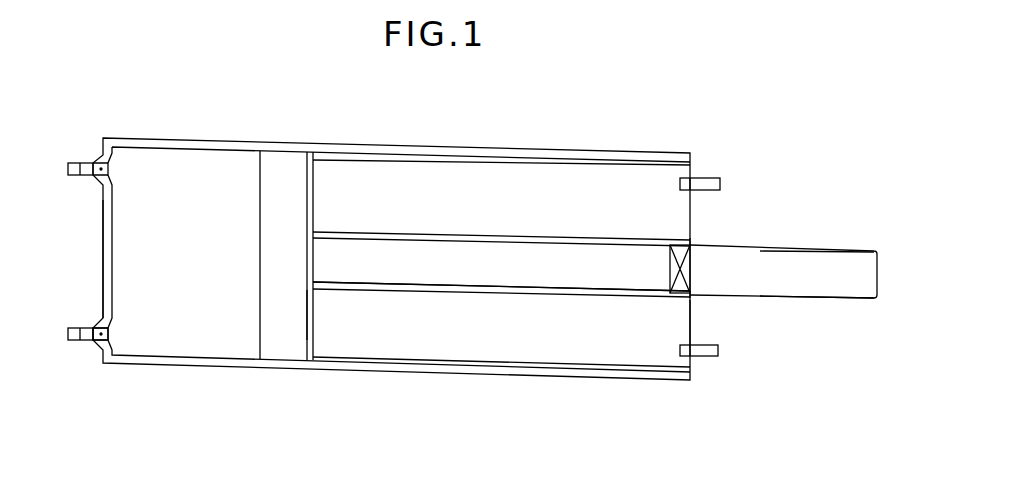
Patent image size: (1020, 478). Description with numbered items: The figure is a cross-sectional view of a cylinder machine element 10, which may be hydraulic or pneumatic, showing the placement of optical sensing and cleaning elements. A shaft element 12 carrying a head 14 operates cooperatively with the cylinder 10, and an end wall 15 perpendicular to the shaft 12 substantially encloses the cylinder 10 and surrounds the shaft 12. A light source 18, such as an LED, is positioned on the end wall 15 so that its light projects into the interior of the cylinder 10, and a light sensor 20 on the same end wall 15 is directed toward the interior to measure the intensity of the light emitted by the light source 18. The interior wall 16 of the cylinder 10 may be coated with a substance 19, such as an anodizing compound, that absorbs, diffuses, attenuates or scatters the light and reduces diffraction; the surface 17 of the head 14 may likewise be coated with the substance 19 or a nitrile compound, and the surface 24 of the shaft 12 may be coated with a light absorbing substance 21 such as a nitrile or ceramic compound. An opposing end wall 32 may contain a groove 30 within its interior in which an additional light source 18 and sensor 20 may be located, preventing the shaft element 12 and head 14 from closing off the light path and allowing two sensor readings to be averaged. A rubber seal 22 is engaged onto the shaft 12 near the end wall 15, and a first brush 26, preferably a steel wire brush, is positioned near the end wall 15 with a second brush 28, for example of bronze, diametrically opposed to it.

The cylinder machine element 10 is at (215, 370).
The shaft element 12 is at (822, 283).
The head 14 is at (283, 170).
The end wall 15 is at (699, 330).
The interior wall 16 is at (497, 161).
The surface of the head 17 is at (313, 313).
The light source 18 is at (78, 343).
The substance 19 is at (313, 190).
The light sensor 20 is at (80, 163).
The light absorbing substance 21 is at (417, 282).
The seal 22 is at (670, 272).
The surface of the shaft 24 is at (813, 247).
The first brush 26 is at (693, 240).
The second brush 28 is at (693, 302).
The groove 30 is at (110, 332).
The opposing end wall 32 is at (103, 258).